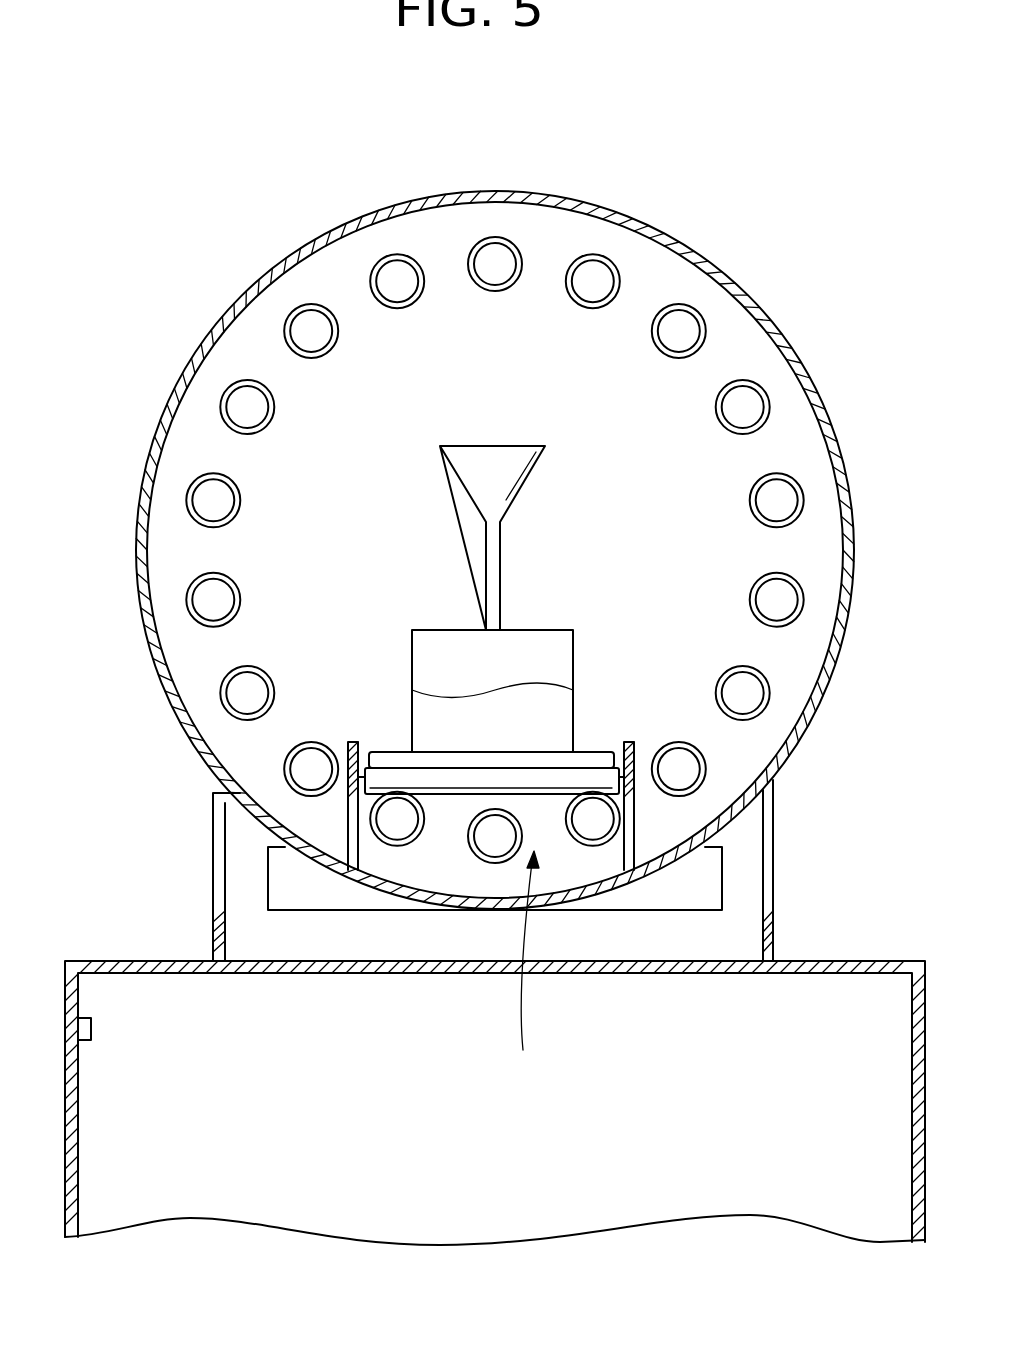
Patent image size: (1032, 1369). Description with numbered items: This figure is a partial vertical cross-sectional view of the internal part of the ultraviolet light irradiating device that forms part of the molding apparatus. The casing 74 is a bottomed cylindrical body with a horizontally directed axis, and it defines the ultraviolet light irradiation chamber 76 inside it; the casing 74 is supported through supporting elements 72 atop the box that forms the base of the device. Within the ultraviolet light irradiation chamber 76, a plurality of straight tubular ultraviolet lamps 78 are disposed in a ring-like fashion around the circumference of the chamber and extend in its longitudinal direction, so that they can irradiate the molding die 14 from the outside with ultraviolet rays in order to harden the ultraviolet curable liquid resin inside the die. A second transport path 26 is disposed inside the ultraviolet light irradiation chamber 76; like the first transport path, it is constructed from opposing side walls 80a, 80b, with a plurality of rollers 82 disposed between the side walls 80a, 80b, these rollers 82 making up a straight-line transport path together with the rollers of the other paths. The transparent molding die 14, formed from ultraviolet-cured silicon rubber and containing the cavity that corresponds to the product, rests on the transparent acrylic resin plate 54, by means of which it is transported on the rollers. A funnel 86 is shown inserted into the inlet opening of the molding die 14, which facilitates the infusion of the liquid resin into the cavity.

The molding die 14 is at (572, 645).
The second transport path 26 is at (521, 971).
The transparent acrylic resin plate 54 is at (391, 757).
The supporting elements 72 is at (748, 893).
The casing 74 is at (690, 243).
The ultraviolet light irradiation chamber 76 is at (567, 225).
The ultraviolet lamps 78 is at (483, 237).
The side wall 80a is at (634, 803).
The side wall 80b is at (353, 803).
The rollers 82 is at (440, 777).
The funnel 86 is at (486, 446).